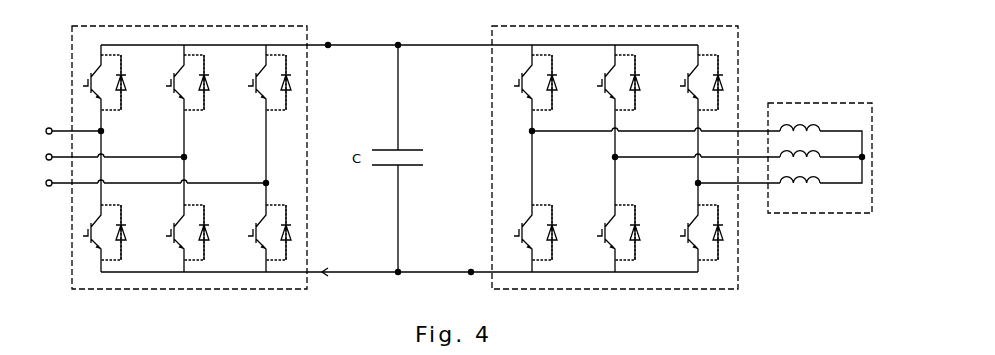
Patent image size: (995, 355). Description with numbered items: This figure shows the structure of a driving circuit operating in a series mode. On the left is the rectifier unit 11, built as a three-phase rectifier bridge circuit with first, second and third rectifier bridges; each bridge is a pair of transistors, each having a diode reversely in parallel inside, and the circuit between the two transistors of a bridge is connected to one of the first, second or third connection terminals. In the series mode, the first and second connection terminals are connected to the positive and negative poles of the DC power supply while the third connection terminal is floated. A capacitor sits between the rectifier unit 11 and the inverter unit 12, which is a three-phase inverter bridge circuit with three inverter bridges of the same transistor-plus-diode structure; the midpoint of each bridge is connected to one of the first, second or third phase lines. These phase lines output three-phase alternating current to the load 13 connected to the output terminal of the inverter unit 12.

The rectifier unit 11 is at (307, 110).
The inverter unit 12 is at (738, 73).
The load 13 is at (808, 102).